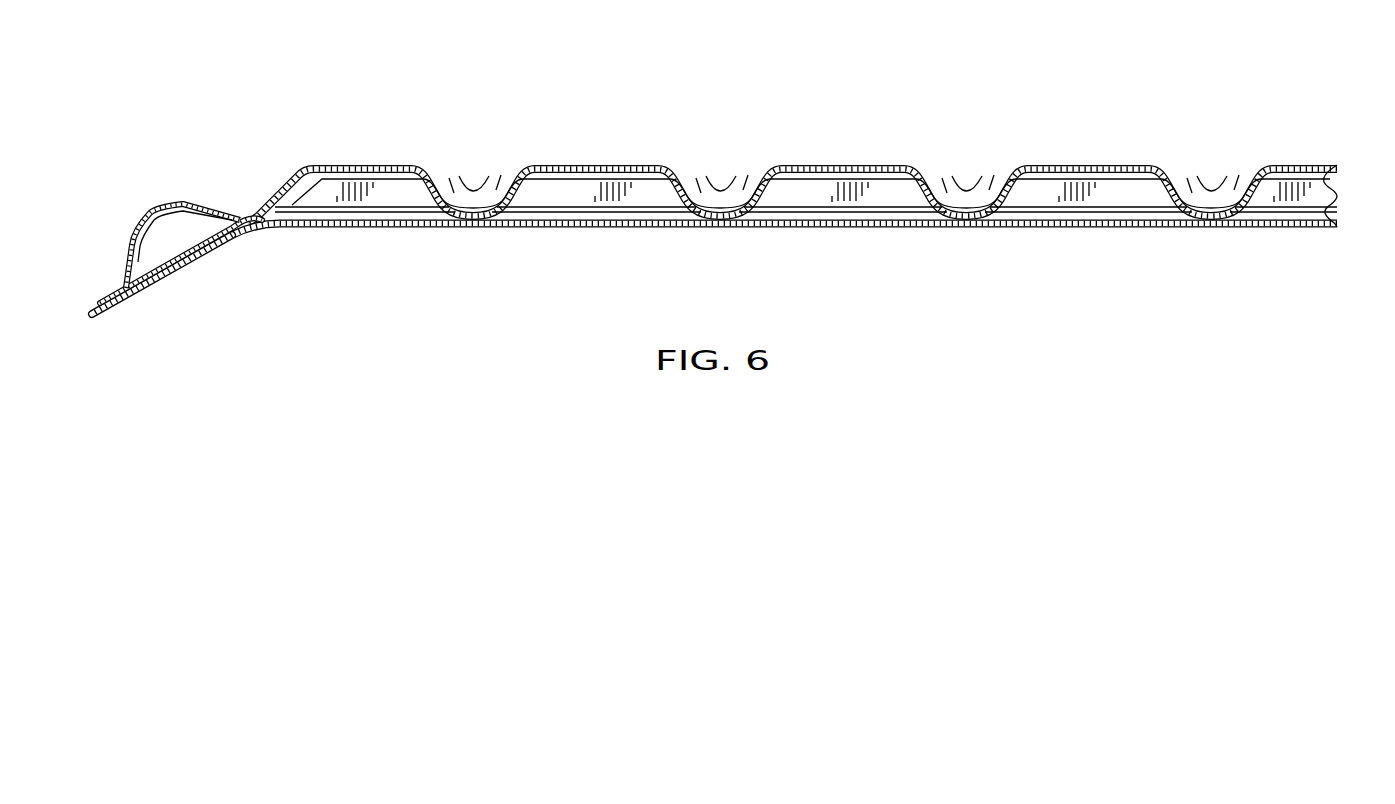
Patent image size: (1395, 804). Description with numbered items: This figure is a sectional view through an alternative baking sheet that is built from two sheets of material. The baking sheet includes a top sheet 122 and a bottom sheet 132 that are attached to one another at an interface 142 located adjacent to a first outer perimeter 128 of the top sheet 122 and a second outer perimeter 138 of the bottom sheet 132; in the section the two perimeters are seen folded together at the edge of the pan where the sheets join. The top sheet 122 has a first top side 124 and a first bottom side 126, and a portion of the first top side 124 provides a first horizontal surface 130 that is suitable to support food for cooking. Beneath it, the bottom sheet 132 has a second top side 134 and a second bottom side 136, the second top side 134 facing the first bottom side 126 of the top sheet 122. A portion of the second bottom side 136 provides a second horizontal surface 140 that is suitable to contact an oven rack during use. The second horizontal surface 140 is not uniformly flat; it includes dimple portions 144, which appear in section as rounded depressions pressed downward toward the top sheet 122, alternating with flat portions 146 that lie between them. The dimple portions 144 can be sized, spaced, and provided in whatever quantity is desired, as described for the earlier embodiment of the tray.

The top sheet 122 is at (784, 272).
The first top side 124 is at (806, 244).
The first bottom side 126 is at (1336, 242).
The first outer perimeter 128 is at (154, 260).
The first horizontal surface 130 is at (806, 262).
The bottom sheet 132 is at (792, 135).
The second top side 134 is at (1359, 182).
The second bottom side 136 is at (894, 153).
The second outer perimeter 138 is at (162, 288).
The second horizontal surface 140 is at (823, 135).
The interface 142 is at (167, 233).
The dimple portions 144 is at (1203, 166).
The flat portions 146 is at (811, 161).